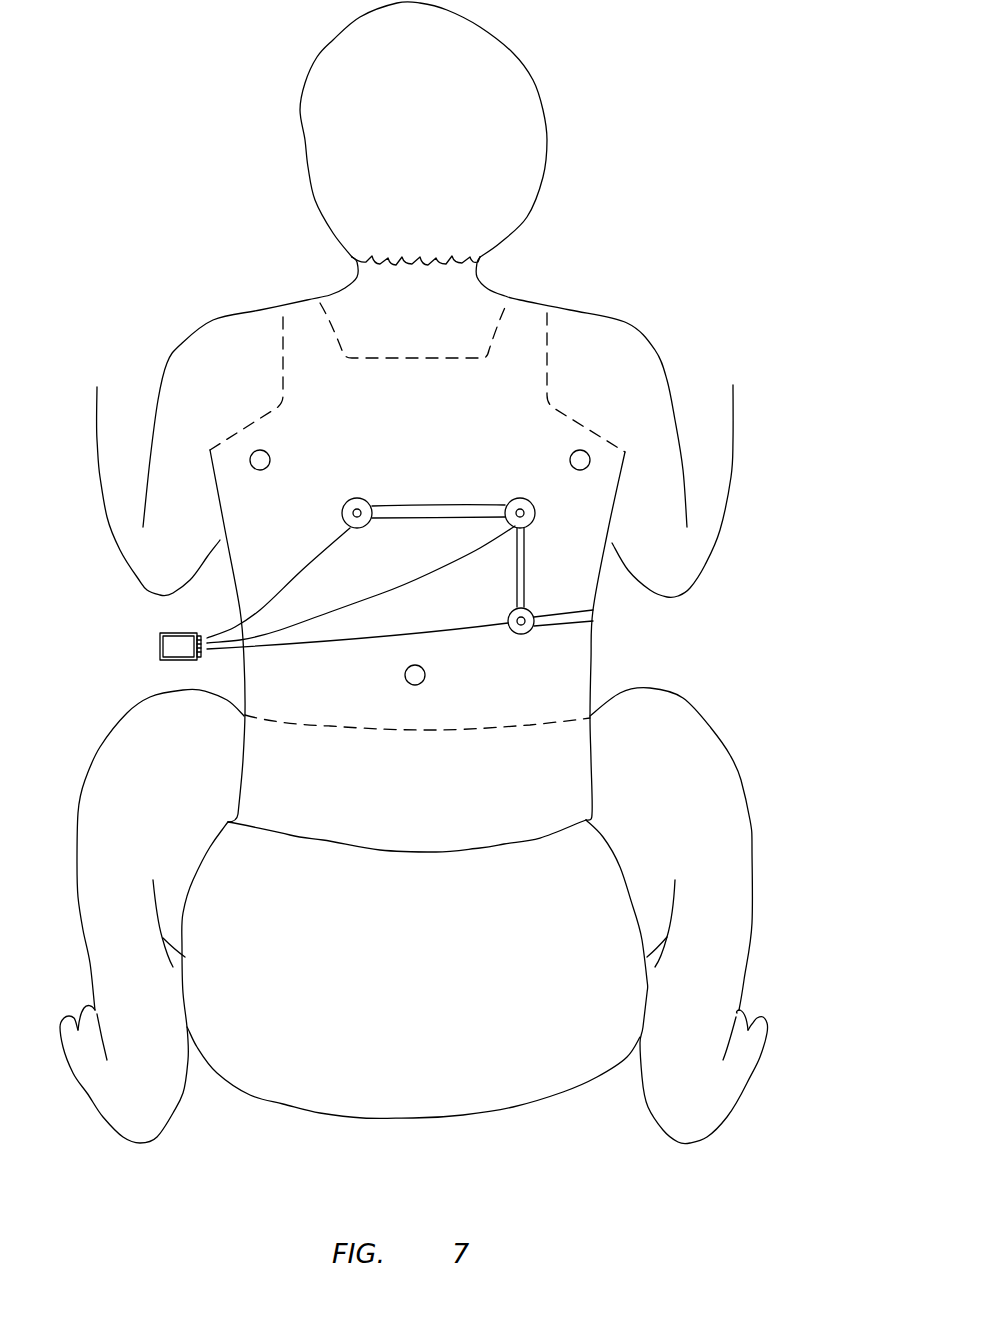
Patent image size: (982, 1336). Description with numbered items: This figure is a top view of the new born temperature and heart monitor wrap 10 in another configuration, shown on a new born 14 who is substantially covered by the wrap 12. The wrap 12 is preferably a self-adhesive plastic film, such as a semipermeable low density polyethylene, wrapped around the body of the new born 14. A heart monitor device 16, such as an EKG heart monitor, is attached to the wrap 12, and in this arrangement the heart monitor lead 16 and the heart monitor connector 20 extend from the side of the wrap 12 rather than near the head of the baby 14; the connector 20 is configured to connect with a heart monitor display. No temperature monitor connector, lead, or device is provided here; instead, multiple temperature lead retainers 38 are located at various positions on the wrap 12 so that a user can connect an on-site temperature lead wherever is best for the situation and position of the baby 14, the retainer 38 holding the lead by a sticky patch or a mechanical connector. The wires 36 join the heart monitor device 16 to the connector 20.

The new born temperature and heart monitor wrap 10 is at (712, 612).
The wrap 12 is at (358, 702).
The new born 14 is at (720, 882).
The heart monitor device 16 is at (357, 498).
The heart monitor connector 20 is at (157, 647).
The wires 36 is at (528, 563).
The temperature lead retainer 38 is at (264, 470).